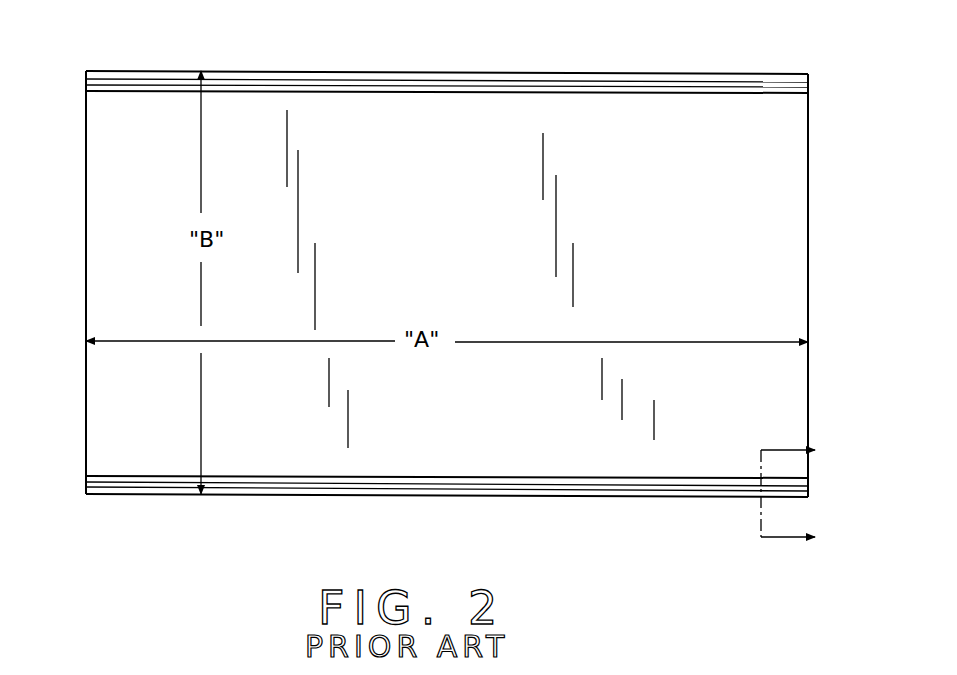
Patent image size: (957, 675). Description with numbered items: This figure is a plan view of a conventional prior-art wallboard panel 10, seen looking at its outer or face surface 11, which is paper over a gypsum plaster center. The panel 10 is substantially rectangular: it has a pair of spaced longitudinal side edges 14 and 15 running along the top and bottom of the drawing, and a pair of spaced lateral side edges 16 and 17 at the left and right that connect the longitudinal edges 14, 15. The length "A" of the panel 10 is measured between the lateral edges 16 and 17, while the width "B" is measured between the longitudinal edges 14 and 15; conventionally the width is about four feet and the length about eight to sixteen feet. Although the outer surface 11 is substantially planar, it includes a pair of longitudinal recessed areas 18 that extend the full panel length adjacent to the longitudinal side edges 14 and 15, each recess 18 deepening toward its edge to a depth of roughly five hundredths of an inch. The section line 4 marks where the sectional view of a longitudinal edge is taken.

The wallboard panel 10 is at (456, 296).
The outer surface 11 is at (438, 442).
The longitudinal side edge 14 is at (222, 497).
The longitudinal side edge 15 is at (158, 71).
The lateral side edge 16 is at (85, 411).
The lateral side edge 17 is at (808, 362).
The longitudinal recessed area 18 is at (285, 80).
The section line 4- 4 is at (800, 494).